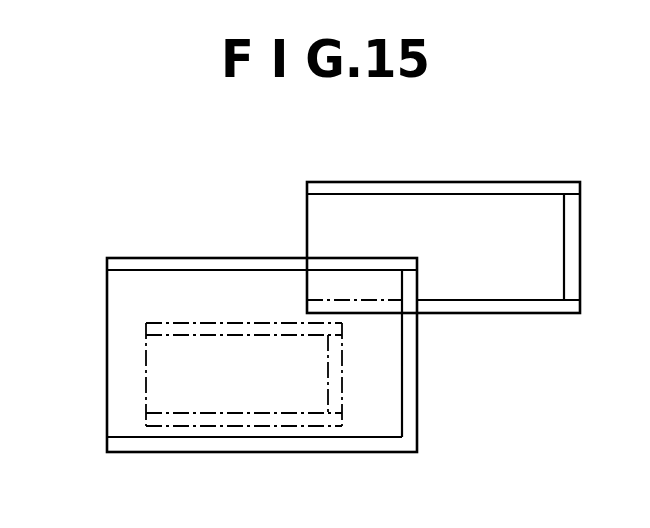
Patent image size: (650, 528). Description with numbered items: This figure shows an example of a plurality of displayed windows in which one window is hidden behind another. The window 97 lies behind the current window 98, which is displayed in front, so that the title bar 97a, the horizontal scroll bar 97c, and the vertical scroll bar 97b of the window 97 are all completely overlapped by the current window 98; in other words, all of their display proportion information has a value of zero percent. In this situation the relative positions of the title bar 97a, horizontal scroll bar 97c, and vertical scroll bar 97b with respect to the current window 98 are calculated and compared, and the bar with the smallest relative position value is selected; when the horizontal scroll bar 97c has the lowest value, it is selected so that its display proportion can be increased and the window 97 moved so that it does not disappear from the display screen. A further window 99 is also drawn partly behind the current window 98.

The window 97 is at (133, 387).
The title bar 97a is at (149, 328).
The vertical scroll bar 97b is at (360, 412).
The horizontal scroll bar 97c is at (244, 457).
The current window 98 is at (177, 258).
The rear casing 99 is at (372, 182).